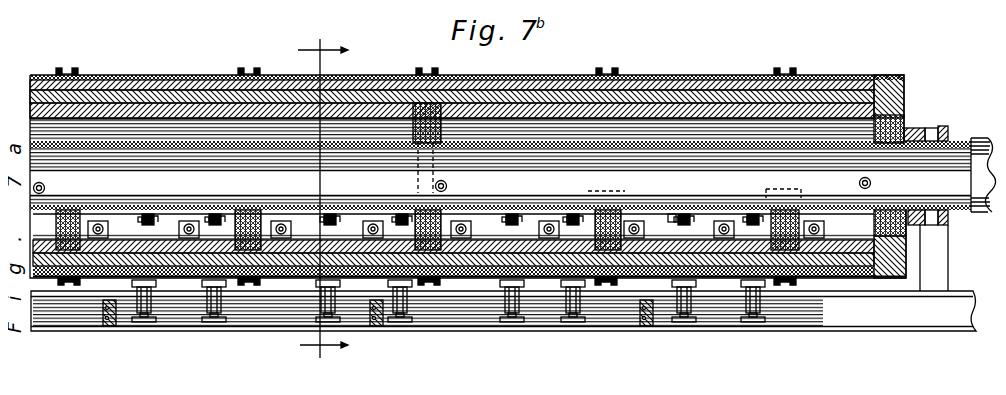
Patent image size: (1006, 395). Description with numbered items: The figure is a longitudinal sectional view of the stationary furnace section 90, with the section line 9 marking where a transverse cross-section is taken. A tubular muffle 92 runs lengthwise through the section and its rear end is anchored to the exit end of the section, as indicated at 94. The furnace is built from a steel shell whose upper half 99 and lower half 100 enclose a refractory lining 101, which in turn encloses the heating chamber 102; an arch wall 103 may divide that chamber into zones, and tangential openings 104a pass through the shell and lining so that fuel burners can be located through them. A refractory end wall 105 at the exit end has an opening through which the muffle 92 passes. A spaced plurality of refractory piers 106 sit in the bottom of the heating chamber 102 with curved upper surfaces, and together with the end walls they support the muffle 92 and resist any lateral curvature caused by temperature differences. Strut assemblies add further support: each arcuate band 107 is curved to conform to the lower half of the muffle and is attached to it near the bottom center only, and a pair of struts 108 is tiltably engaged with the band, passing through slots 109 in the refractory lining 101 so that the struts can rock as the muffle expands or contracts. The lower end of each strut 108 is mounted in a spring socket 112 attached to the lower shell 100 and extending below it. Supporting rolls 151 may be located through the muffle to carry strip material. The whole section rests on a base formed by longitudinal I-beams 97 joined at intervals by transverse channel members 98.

The section line 9- 9 is at (323, 199).
The stationary furnace section 90 is at (706, 62).
The tubular muffle 92 is at (550, 196).
The muffle anchorage 94 is at (912, 119).
The longitudinal I-beams 97 is at (783, 305).
The transverse channel members 98 is at (105, 322).
The upper steel shell half 99 is at (876, 66).
The lower steel shell half 100 is at (829, 270).
The refractory lining 101 is at (628, 80).
The heating chamber 102 is at (527, 122).
The arch wall 103 is at (438, 108).
The tangential openings 104a is at (270, 213).
The refractory exit end wall 105 is at (882, 210).
The refractory piers 106 is at (82, 203).
The arcuate band 107 is at (204, 208).
The struts 108 is at (140, 205).
The slots 109 is at (665, 208).
The spring socket 112 is at (193, 302).
The supporting rolls 151 is at (34, 180).